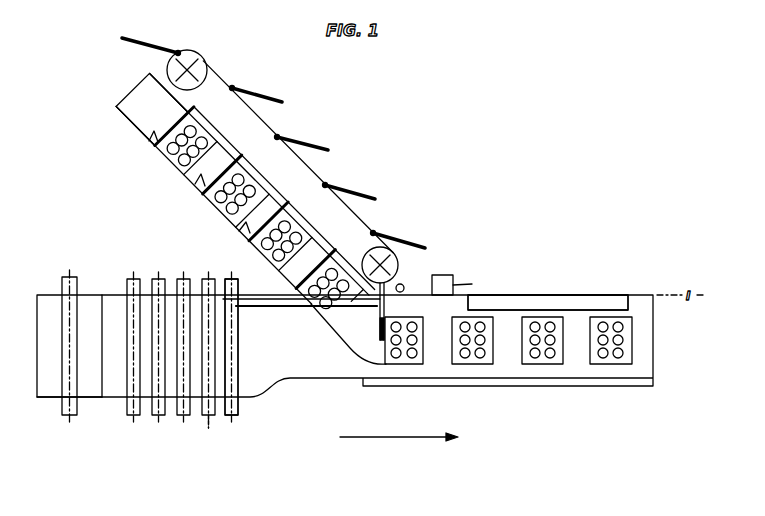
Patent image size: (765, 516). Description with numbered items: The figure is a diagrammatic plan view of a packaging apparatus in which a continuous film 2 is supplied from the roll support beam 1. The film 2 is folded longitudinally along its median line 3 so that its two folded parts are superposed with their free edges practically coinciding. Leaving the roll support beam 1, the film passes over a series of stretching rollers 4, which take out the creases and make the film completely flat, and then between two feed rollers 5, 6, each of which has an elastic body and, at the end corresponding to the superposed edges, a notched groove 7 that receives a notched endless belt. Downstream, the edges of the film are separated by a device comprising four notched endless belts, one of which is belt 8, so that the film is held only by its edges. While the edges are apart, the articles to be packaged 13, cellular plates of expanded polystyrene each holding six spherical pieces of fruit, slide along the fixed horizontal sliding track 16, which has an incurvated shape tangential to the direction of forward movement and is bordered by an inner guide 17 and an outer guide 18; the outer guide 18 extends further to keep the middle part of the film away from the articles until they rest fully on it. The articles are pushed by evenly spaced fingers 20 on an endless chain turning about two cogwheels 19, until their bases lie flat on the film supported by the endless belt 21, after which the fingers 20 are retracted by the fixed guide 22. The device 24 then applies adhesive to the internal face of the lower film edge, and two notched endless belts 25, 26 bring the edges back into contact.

The roll support beam 1 is at (61, 336).
The film 2 is at (345, 323).
The median line 3 is at (75, 409).
The stretching rollers 4 is at (171, 339).
The feed roller 5 is at (231, 336).
The feed roller 6 is at (235, 332).
The groove 7 is at (215, 348).
The notched endless belt 8 is at (306, 316).
The articles to be packaged 13 is at (251, 216).
The sliding track 16 is at (134, 109).
The inner guide 17 is at (158, 81).
The outer guide 18 is at (125, 125).
The cogwheels 19 is at (293, 187).
The fingers 20 is at (263, 210).
The endless belt 21 is at (508, 365).
The fixed guide 22 is at (436, 272).
The adhesive device 24 is at (474, 275).
The notched endless belt 25 is at (548, 293).
The notched endless belt 26 is at (548, 302).